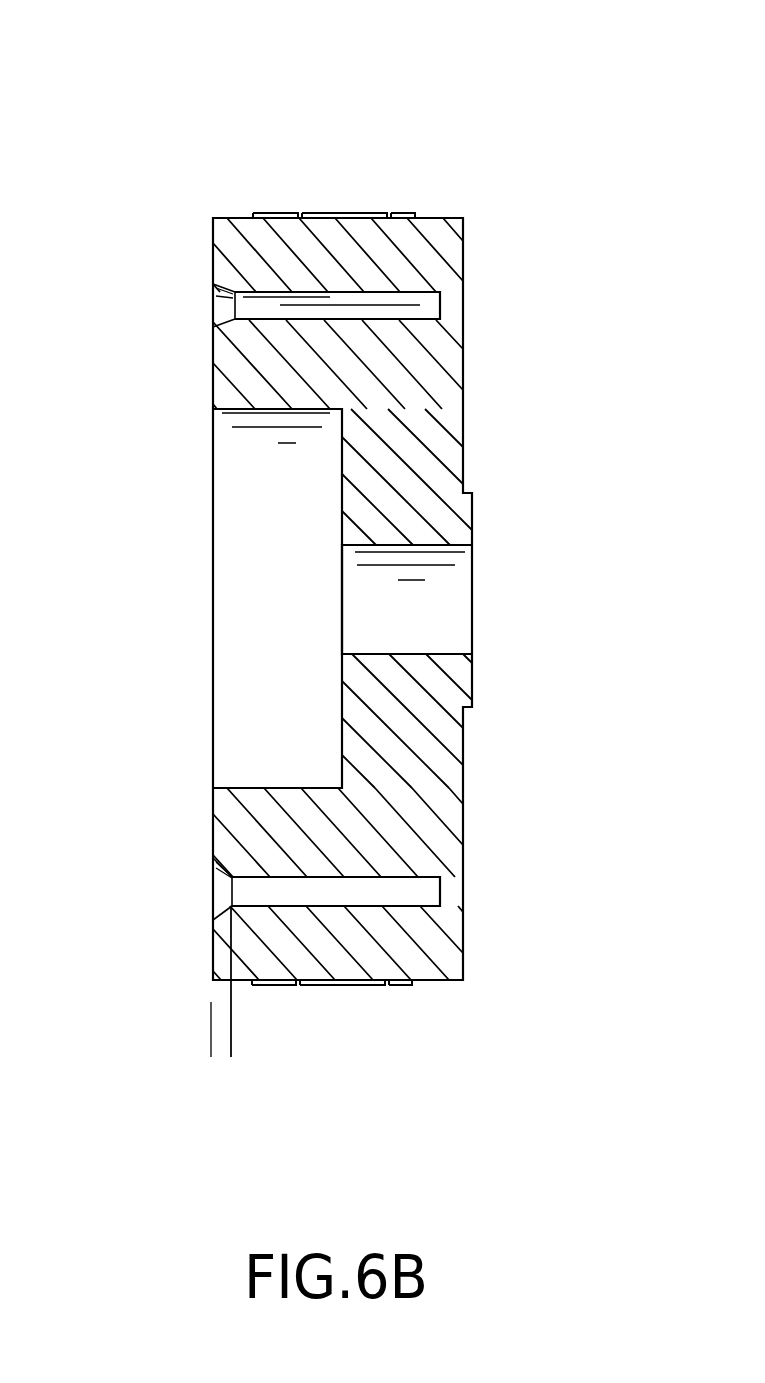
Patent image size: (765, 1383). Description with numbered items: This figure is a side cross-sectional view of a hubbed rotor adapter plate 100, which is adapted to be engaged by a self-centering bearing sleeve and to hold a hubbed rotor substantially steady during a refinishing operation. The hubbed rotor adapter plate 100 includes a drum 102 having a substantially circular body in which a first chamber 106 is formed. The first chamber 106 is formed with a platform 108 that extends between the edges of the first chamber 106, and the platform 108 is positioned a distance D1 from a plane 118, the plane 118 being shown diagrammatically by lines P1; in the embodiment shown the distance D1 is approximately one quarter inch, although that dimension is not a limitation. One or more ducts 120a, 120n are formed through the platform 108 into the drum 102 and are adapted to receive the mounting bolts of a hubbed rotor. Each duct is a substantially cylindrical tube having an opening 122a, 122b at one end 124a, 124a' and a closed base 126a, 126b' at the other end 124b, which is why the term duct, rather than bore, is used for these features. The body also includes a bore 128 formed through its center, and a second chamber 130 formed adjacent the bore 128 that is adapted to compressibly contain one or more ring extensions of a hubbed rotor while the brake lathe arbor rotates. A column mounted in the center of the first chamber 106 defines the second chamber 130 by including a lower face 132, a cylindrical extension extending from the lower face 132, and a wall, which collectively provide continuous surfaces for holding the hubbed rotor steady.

The hubbed rotor adapter plate 100 is at (140, 104).
The drum 102 is at (458, 218).
The first chamber 106 is at (222, 305).
The platform 108 is at (228, 888).
The plane 118 is at (212, 956).
The duct 120a is at (430, 312).
The duct 120n is at (435, 887).
The opening 122a is at (232, 296).
The opening 122b is at (230, 873).
The end 124a is at (260, 217).
The end 124b is at (443, 325).
The end 124a' is at (177, 808).
The closed base 126a is at (430, 302).
The closed base 126b' is at (442, 969).
The bore 128 is at (460, 607).
The second chamber 130 is at (222, 440).
The lower face 132 is at (340, 730).
The distance D1 is at (209, 1040).
The lines P1 is at (231, 1013).